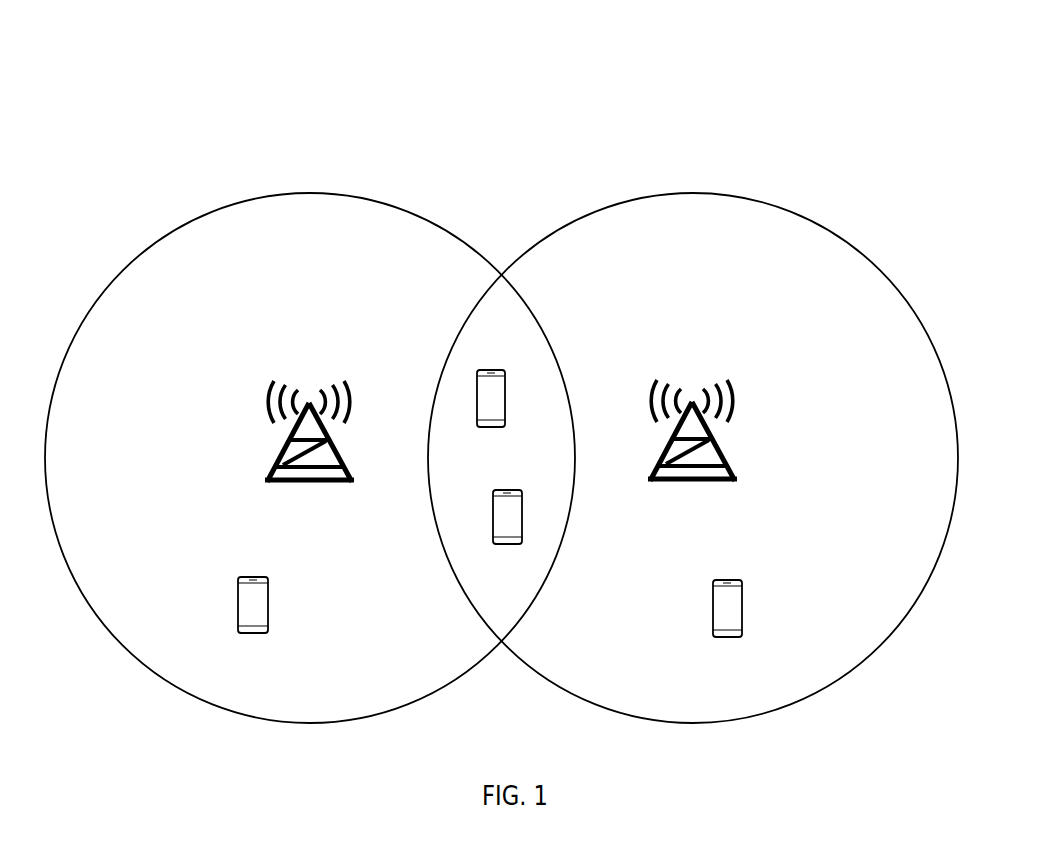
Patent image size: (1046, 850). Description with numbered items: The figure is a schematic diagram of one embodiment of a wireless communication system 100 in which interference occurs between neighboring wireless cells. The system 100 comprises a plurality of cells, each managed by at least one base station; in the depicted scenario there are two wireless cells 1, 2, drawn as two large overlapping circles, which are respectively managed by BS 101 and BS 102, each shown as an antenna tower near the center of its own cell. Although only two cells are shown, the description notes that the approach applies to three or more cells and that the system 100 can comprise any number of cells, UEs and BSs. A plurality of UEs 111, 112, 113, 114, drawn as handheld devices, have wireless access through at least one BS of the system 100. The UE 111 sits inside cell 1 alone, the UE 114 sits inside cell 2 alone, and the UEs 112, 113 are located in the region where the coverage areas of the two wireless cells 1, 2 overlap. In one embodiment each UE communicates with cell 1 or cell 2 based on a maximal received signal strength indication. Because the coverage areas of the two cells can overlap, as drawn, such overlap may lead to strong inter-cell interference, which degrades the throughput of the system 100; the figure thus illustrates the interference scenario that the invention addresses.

The wireless communication system 100 is at (528, 78).
The wireless cell 1 is at (205, 213).
The wireless cell 2 is at (862, 255).
The BS 101 is at (309, 382).
The BS 102 is at (708, 411).
The UE 111 is at (244, 577).
The UE 112 is at (488, 370).
The UE 113 is at (506, 490).
The UE 114 is at (728, 580).